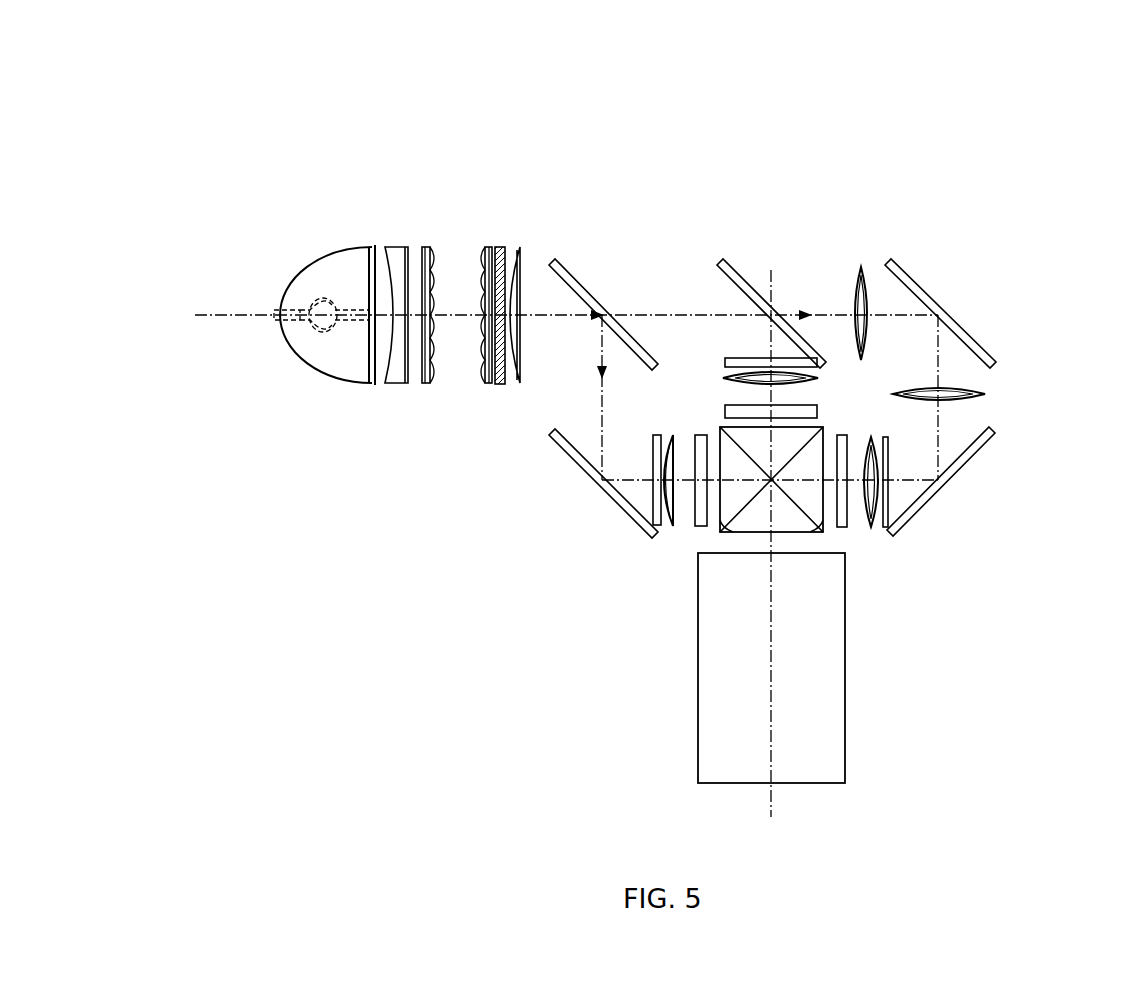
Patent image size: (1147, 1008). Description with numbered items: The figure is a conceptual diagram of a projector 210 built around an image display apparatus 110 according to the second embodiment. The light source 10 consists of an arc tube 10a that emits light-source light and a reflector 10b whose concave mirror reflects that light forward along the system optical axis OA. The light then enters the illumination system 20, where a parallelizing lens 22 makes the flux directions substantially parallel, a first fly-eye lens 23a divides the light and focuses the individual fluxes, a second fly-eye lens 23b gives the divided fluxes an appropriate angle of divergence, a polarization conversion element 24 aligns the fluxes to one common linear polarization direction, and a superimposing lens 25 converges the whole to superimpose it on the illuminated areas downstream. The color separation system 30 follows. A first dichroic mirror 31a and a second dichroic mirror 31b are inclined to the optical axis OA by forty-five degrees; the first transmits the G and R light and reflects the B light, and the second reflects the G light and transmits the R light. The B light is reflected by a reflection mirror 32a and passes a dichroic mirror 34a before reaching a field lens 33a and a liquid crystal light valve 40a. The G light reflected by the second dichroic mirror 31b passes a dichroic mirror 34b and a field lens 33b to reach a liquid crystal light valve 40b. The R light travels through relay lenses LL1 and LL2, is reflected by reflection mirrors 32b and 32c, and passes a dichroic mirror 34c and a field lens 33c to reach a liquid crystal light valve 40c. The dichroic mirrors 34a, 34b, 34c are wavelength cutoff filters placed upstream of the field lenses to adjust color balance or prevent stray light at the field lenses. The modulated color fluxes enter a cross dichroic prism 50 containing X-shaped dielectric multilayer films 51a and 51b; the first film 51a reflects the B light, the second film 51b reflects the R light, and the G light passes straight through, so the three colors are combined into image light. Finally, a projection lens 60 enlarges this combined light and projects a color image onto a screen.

The projector 210 is at (1082, 43).
The image display apparatus 110 is at (683, 160).
The light source 10 is at (296, 273).
The arc tube 10a is at (312, 332).
The reflector 10b is at (322, 262).
The illumination system 20 is at (434, 285).
The parallelizing lens 22 is at (392, 247).
The first fly-eye lens 23a is at (427, 247).
The second fly-eye lens 23b is at (484, 384).
The polarization conversion element 24 is at (498, 385).
The superimposing lens 25 is at (516, 385).
The system optical axis OA is at (452, 315).
The color separation system 30 is at (795, 356).
The first dichroic mirror 31a is at (570, 262).
The second dichroic mirror 31b is at (738, 262).
The reflection mirror 32a is at (553, 445).
The reflection mirror 32b is at (965, 330).
The reflection mirror 32c is at (978, 450).
The field lens 33a is at (666, 505).
The field lens 33b is at (819, 377).
The field lens 33c is at (900, 526).
The dichroic mirror 34a is at (653, 455).
The dichroic mirror 34b is at (727, 365).
The dichroic mirror 34c is at (888, 470).
The relay lens LL1 is at (861, 265).
The relay lens LL2 is at (986, 395).
The blue light B is at (600, 399).
The green light G is at (768, 343).
The red light R is at (937, 425).
The liquid crystal light valve 40a is at (700, 527).
The liquid crystal light valve 40b is at (725, 411).
The liquid crystal light valve 40c is at (846, 528).
The cross dichroic prism 50 is at (773, 551).
The first dielectric multilayer film 51a is at (812, 532).
The second dielectric multilayer film 51b is at (730, 532).
The projection lens 60 is at (718, 706).